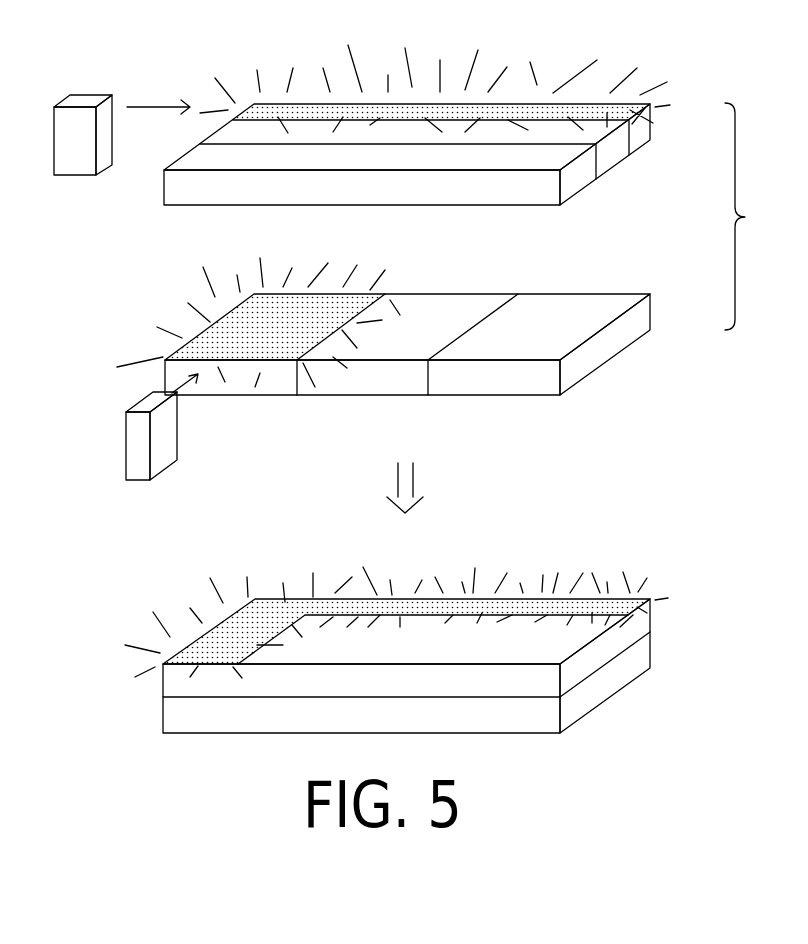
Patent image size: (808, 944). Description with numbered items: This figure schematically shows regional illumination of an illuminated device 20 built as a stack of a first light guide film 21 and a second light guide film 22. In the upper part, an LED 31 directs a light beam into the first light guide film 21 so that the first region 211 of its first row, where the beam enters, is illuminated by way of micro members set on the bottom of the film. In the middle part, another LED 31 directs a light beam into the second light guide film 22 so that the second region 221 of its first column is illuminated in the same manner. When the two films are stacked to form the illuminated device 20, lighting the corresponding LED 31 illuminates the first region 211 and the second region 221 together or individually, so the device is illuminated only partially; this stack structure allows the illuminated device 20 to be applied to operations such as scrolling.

The illuminated device 20 is at (646, 558).
The first light guide film 21 is at (164, 174).
The first region 211 is at (583, 108).
The second light guide film 22 is at (165, 375).
The second region 221 is at (273, 388).
The LED 31 is at (88, 98).